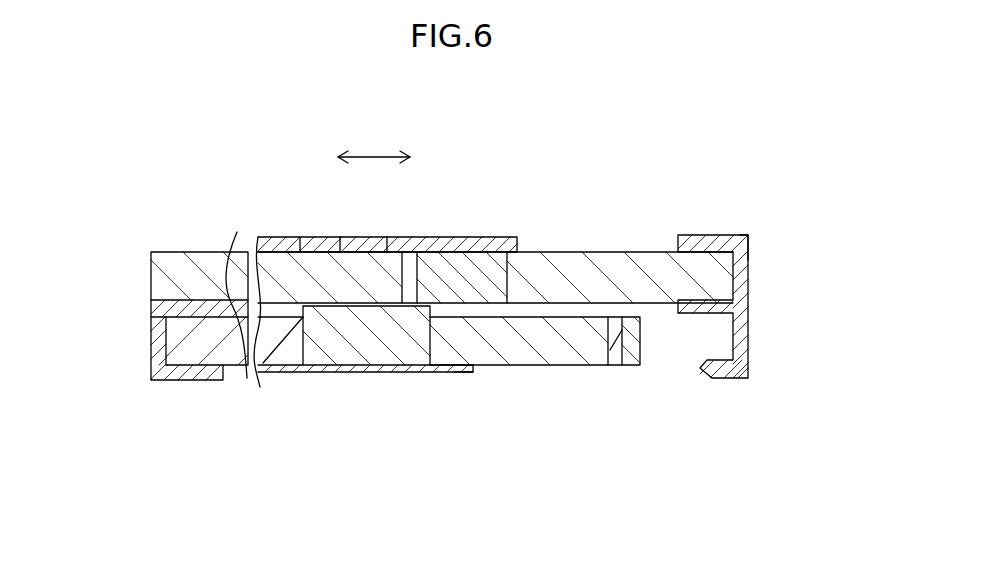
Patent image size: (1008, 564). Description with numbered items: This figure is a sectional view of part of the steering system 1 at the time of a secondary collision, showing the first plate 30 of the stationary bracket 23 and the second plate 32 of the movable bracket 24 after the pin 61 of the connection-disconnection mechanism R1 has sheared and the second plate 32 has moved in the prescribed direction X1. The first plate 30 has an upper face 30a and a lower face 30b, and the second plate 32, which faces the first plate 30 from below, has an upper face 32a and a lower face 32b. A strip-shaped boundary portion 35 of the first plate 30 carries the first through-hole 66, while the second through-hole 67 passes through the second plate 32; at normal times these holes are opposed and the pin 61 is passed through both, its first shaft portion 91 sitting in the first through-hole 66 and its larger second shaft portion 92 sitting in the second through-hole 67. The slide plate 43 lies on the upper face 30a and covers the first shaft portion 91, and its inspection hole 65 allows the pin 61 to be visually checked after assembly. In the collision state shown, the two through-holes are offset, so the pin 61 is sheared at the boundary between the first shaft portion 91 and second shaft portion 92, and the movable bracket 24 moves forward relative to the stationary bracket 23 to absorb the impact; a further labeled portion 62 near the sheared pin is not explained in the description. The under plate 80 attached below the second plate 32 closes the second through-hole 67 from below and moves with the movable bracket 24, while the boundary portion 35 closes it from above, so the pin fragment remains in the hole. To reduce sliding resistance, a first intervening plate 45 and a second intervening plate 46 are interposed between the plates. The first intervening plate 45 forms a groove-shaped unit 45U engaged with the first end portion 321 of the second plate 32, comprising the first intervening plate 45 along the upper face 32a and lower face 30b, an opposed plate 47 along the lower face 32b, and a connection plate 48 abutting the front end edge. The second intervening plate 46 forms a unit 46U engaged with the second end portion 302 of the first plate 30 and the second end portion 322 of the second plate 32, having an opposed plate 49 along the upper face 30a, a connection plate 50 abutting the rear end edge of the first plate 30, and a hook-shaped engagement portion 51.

The steering system 1 is at (653, 183).
The prescribed direction X1 is at (374, 153).
The stationary bracket 23 is at (450, 233).
The first plate 30 is at (204, 248).
The upper face of the first plate 30a is at (596, 249).
The lower face of the first plate 30b is at (258, 322).
The slide plate 43 is at (286, 243).
The boundary portion 35 is at (330, 257).
The inspection hole 65 is at (372, 243).
The first through-hole 66 is at (498, 240).
The pin 61 is at (543, 132).
The second shaft portion 92 is at (402, 238).
The first shaft portion 91 is at (452, 273).
The first intervening plate 45 is at (163, 258).
The groove-shaped unit 45U is at (149, 318).
The connection plate 48 is at (160, 345).
The first end portion 321 is at (175, 348).
The lower face of the second plate 32b is at (185, 382).
The upper face of the second plate 32a is at (234, 294).
The opposed plate 47 is at (211, 383).
The second plate 32 is at (581, 369).
The movable bracket 24 is at (449, 341).
The supporting portion 62 is at (507, 289).
The second through-hole 67 is at (422, 374).
The under plate 80 is at (440, 376).
The connection-disconnection mechanism R1 is at (465, 388).
The second end portion of the second plate 322 is at (635, 340).
The second intervening plate 46 is at (680, 300).
The unit 46U is at (753, 247).
The opposed plate 49 is at (712, 248).
The connection plate 50 is at (749, 265).
The second end portion of the first plate 302 is at (724, 298).
The engagement portion 51 is at (736, 380).